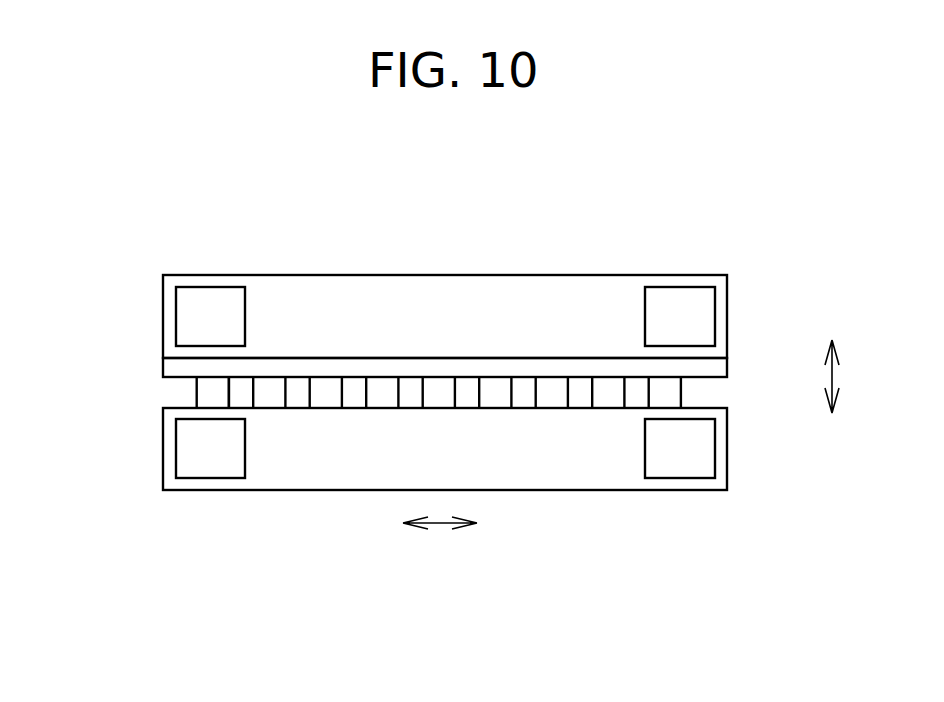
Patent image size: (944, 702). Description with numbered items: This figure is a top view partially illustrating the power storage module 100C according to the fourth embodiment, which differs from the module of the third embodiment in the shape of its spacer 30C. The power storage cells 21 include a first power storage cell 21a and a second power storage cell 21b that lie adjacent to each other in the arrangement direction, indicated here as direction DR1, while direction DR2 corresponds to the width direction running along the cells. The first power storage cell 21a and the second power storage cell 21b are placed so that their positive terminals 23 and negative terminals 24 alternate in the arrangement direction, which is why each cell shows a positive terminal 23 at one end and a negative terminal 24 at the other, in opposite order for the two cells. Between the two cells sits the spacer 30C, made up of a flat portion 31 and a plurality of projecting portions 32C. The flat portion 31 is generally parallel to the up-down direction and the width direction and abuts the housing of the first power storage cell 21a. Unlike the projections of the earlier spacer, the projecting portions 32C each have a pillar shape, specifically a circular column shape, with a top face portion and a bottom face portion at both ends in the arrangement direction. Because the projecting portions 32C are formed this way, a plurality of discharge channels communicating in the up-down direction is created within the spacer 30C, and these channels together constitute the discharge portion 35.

The power storage module 100C is at (816, 200).
The power storage cells 21 is at (518, 382).
The first power storage cell 21a is at (727, 305).
The second power storage cell 21b is at (727, 448).
The positive terminal 23 is at (680, 300).
The negative terminal 24 is at (210, 300).
The spacer 30C is at (72, 350).
The flat portion 31 is at (175, 367).
The projecting portions 32C is at (212, 393).
The discharge portion 35 is at (243, 398).
The first direction DR1 is at (835, 378).
The second direction DR2 is at (440, 527).